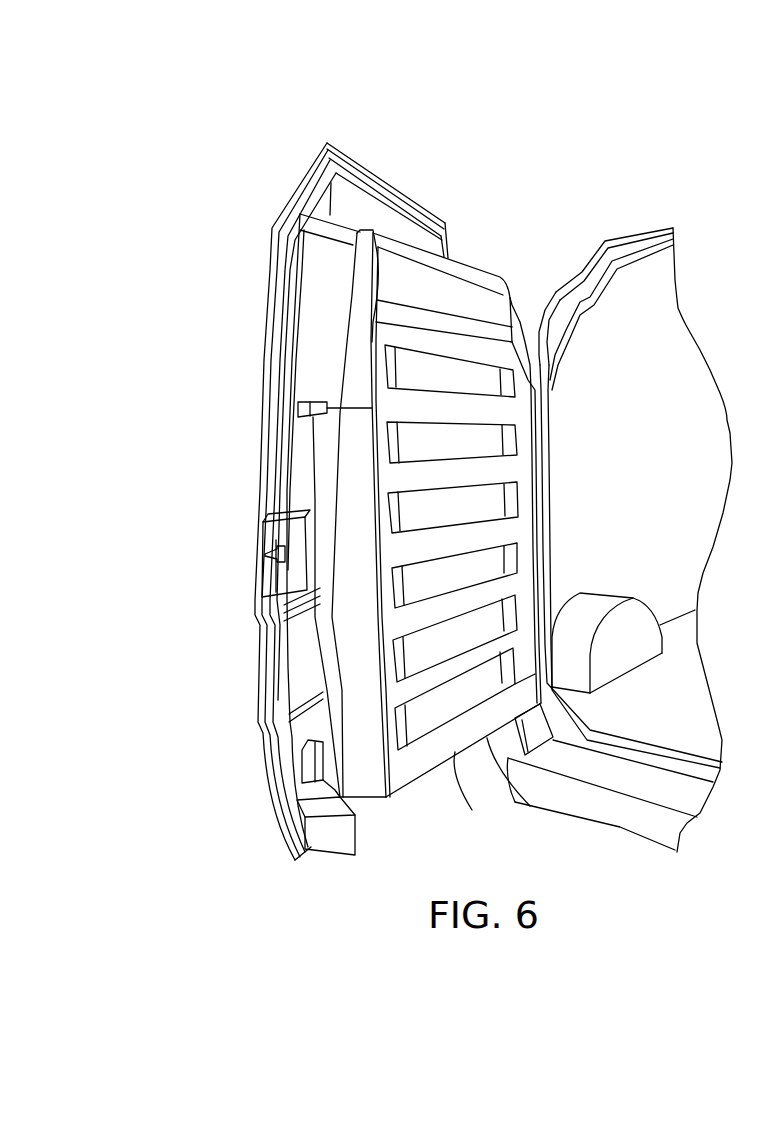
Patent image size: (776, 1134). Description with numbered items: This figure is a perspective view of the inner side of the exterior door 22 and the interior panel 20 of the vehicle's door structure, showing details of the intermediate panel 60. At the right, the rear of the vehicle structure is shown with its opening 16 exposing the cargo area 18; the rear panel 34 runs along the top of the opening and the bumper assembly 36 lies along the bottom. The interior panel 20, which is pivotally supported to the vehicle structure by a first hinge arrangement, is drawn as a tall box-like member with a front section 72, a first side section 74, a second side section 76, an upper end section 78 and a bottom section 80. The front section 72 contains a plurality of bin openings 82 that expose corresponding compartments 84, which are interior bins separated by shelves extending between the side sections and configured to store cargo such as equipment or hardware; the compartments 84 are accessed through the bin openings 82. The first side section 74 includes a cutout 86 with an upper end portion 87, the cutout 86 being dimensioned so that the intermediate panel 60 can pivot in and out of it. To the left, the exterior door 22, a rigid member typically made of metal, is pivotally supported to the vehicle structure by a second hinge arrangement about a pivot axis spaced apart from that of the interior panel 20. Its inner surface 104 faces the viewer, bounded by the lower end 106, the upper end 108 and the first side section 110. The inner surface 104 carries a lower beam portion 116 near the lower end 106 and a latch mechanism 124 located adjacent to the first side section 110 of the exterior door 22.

The opening 16 is at (585, 307).
The cargo area 18 is at (628, 528).
The interior panel 20 is at (470, 499).
The exterior door 22 is at (315, 504).
The rear panel 34 is at (623, 250).
The bumper assembly 36 is at (600, 810).
The intermediate panel 60 is at (358, 741).
The front section 72 is at (518, 412).
The first side section 74 is at (368, 283).
The second side section 76 is at (546, 497).
The upper end section 78 is at (470, 263).
The bottom section 80 is at (460, 763).
The bin openings 82 is at (512, 397).
The compartments 84 is at (455, 375).
The cutout 86 is at (378, 777).
The upper end portion 87 is at (357, 407).
The inner surface 104 is at (317, 333).
The lower end 106 is at (310, 847).
The upper end 108 is at (365, 168).
The first side section 110 is at (265, 490).
The lower beam portion 116 is at (333, 837).
The latch mechanism 124 is at (295, 575).